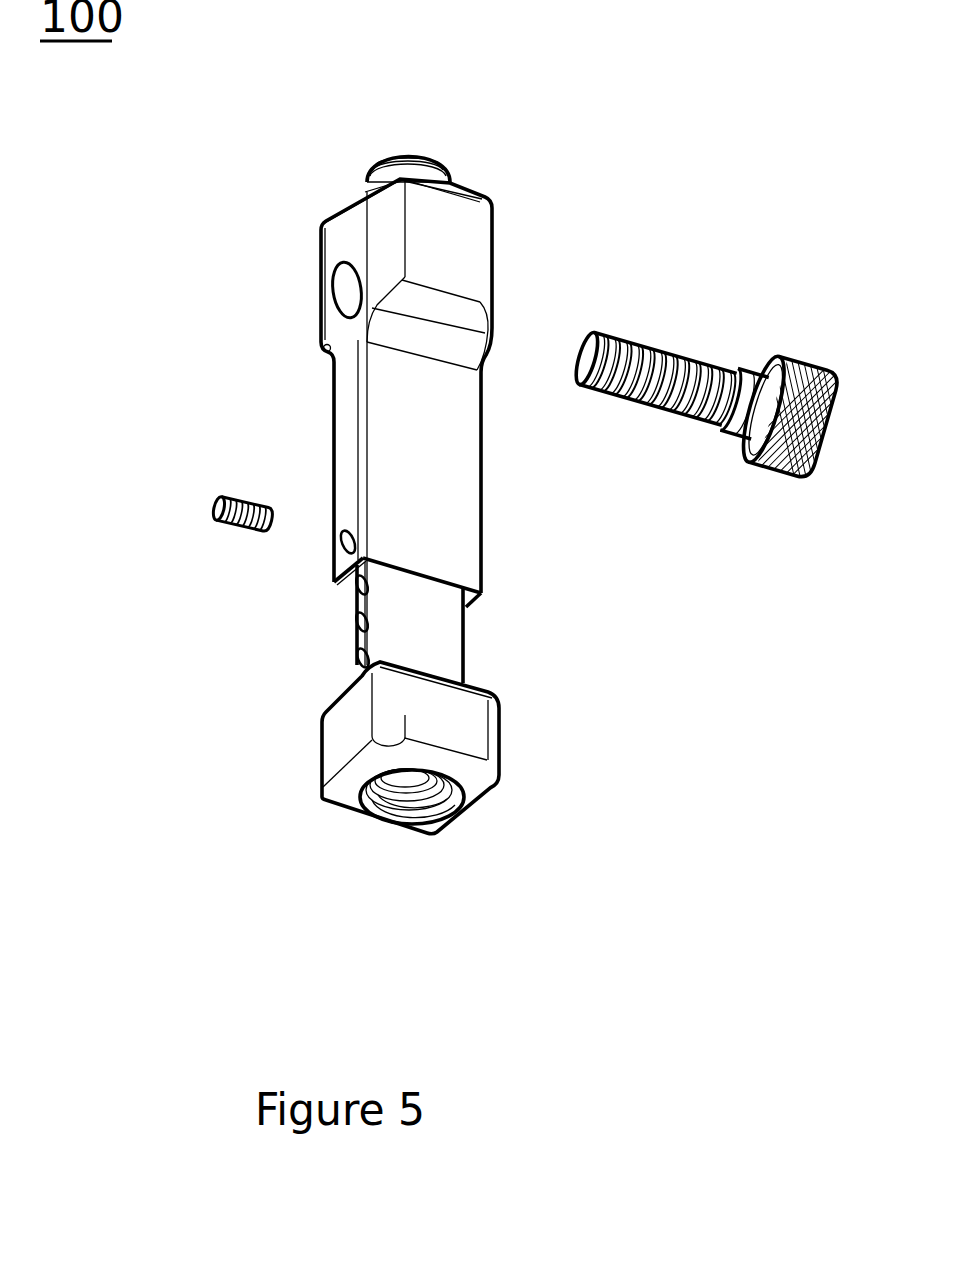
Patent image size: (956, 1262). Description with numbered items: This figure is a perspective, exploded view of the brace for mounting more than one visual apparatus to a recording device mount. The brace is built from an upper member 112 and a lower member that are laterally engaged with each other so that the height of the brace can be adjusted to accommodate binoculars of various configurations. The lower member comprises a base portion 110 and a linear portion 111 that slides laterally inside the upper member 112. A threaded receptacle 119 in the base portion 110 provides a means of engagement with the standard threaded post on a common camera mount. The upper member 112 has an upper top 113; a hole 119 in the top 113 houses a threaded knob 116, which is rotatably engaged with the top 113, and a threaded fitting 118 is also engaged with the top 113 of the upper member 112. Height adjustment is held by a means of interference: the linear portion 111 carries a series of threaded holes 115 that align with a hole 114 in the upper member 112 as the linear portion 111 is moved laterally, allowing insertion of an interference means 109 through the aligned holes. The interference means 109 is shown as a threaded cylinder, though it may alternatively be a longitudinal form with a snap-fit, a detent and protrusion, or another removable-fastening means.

The interference means 109 is at (220, 523).
The base portion 110 is at (448, 727).
The linear portion 111 is at (422, 637).
The upper member 112 is at (347, 437).
The upper top 113 is at (460, 247).
The hole 114 is at (358, 522).
The threaded holes 115 is at (353, 618).
The threaded knob 116 is at (733, 362).
The threaded fitting 118 is at (445, 168).
The hole / threaded receptacle 119 is at (338, 270).